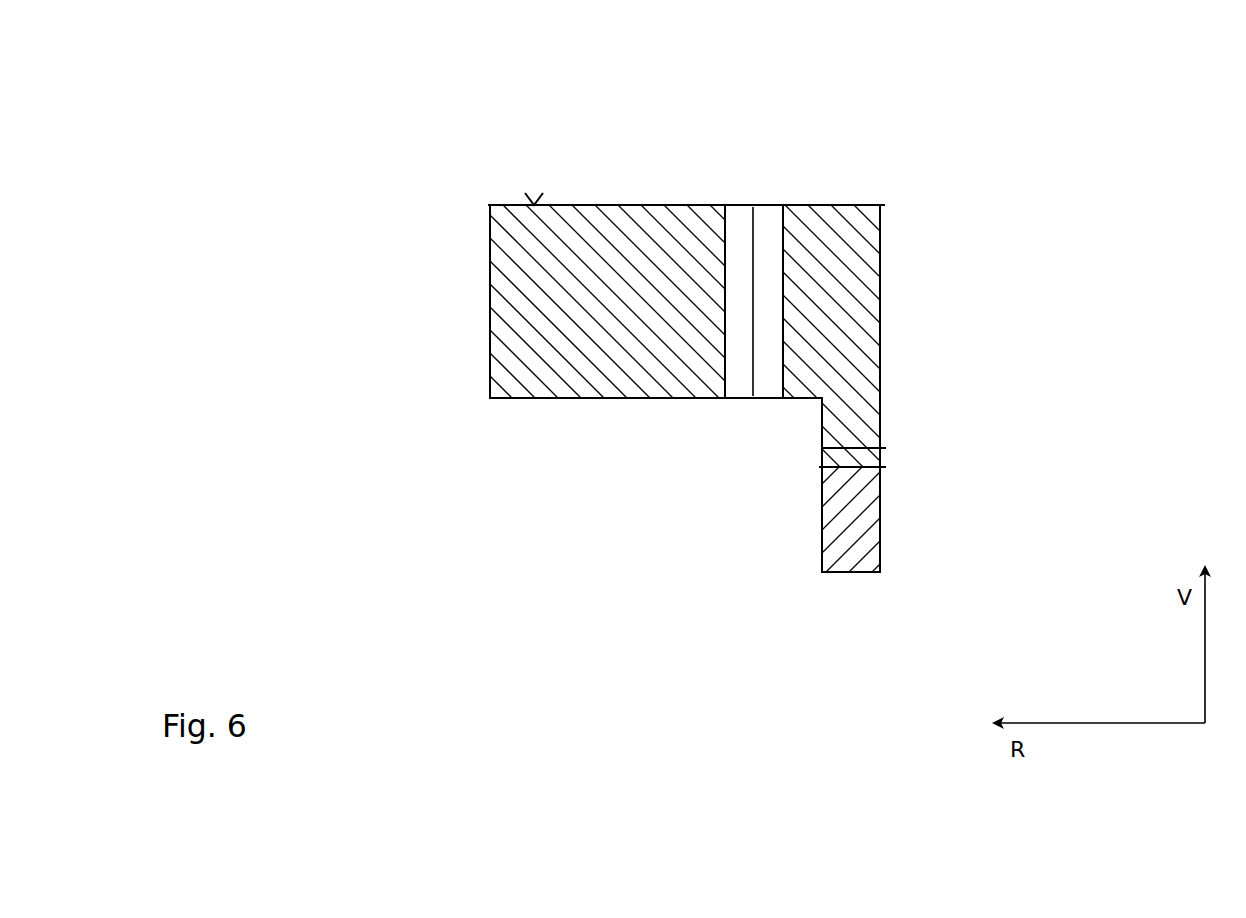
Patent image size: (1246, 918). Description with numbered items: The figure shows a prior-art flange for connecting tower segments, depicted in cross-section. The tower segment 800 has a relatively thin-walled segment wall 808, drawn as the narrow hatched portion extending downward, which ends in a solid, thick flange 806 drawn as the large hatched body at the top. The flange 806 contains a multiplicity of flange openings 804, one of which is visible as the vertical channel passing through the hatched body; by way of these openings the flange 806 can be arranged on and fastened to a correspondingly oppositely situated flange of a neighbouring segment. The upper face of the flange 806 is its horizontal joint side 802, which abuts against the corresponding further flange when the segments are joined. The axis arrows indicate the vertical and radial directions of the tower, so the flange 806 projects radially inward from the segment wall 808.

The segment 800 is at (336, 136).
The horizontal joint side 802 is at (664, 203).
The flange openings 804 is at (764, 203).
The flange 806 is at (542, 363).
The segment wall 808 is at (855, 531).